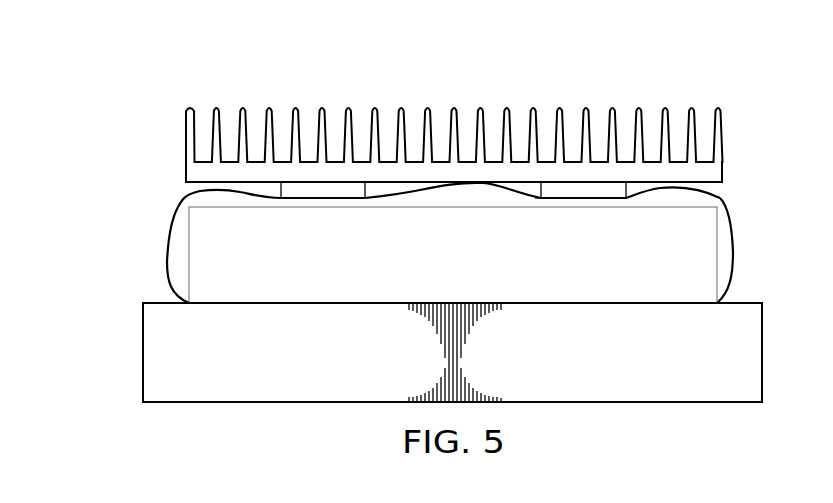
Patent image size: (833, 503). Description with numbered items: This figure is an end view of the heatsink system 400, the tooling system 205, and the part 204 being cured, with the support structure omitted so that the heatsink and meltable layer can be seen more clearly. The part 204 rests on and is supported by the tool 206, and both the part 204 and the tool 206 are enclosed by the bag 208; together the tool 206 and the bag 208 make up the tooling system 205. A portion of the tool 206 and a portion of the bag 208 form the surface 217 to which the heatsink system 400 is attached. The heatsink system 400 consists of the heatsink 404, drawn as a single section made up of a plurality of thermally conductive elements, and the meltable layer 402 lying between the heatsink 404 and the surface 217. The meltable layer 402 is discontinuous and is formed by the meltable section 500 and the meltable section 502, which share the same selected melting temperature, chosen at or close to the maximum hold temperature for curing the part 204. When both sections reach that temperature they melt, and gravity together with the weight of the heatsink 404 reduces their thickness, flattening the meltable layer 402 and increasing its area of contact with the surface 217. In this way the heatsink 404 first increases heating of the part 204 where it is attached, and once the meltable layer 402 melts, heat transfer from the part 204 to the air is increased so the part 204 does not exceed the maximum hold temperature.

The heatsink system 400 is at (454, 100).
The heatsink 404 is at (443, 99).
The meltable section 500 is at (322, 190).
The meltable section 502 is at (583, 190).
The surface 217 is at (173, 213).
The bag 208 is at (450, 241).
The part 204 is at (367, 295).
The meltable layer 402 is at (558, 203).
The tool 206 is at (419, 380).
The tooling system 205 is at (290, 402).